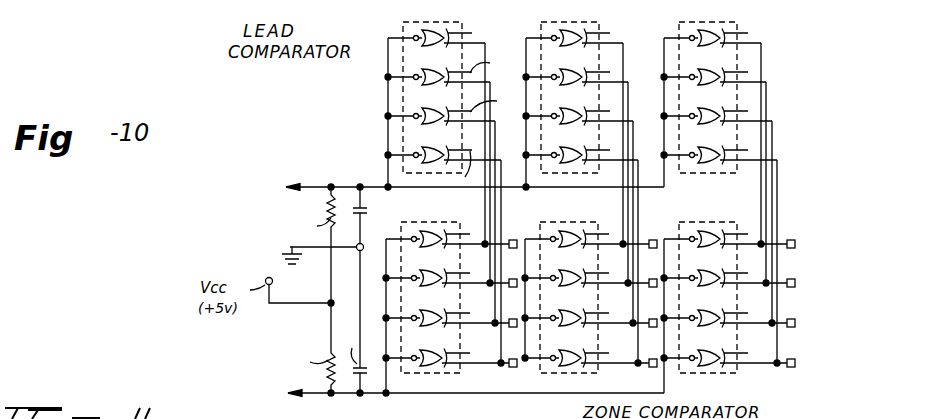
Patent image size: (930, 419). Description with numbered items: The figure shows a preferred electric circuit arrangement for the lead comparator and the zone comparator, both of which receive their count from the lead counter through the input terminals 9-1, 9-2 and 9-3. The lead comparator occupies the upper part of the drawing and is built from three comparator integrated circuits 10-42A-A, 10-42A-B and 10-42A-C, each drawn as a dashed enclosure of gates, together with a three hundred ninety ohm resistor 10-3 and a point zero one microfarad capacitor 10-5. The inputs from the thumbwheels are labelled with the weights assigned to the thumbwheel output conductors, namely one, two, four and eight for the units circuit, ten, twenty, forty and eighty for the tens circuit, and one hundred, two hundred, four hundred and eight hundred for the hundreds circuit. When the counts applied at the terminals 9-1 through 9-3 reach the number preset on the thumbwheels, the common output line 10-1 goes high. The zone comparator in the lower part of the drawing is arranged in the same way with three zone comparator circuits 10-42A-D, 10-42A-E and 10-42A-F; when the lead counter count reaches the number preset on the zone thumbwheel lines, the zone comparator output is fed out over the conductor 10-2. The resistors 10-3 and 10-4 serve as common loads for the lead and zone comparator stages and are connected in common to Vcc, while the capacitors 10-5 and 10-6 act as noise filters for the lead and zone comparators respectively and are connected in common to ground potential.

The common output line 10-1 is at (308, 183).
The conductor 10-2 is at (314, 396).
The 390 ohm resistor 10-3 is at (338, 215).
The 390 ohm resistor 10-4 is at (328, 383).
The 0.01 microfarad capacitor 10-5 is at (358, 210).
The 0.01 microfarad capacitor 10-6 is at (363, 377).
The 8242 circuit 10-42A-A is at (430, 17).
The 8242 circuit 10-42A-B is at (575, 17).
The 8242 circuit 10-42A-C is at (707, 17).
The zone comparator circuit 10-42A-D is at (405, 217).
The zone comparator circuit 10-42A-E is at (538, 220).
The zone comparator circuit 10-42A-F is at (678, 221).
The input terminal 9-3 is at (512, 369).
The input terminal 9-2 is at (651, 369).
The input terminal 9-1 is at (790, 369).